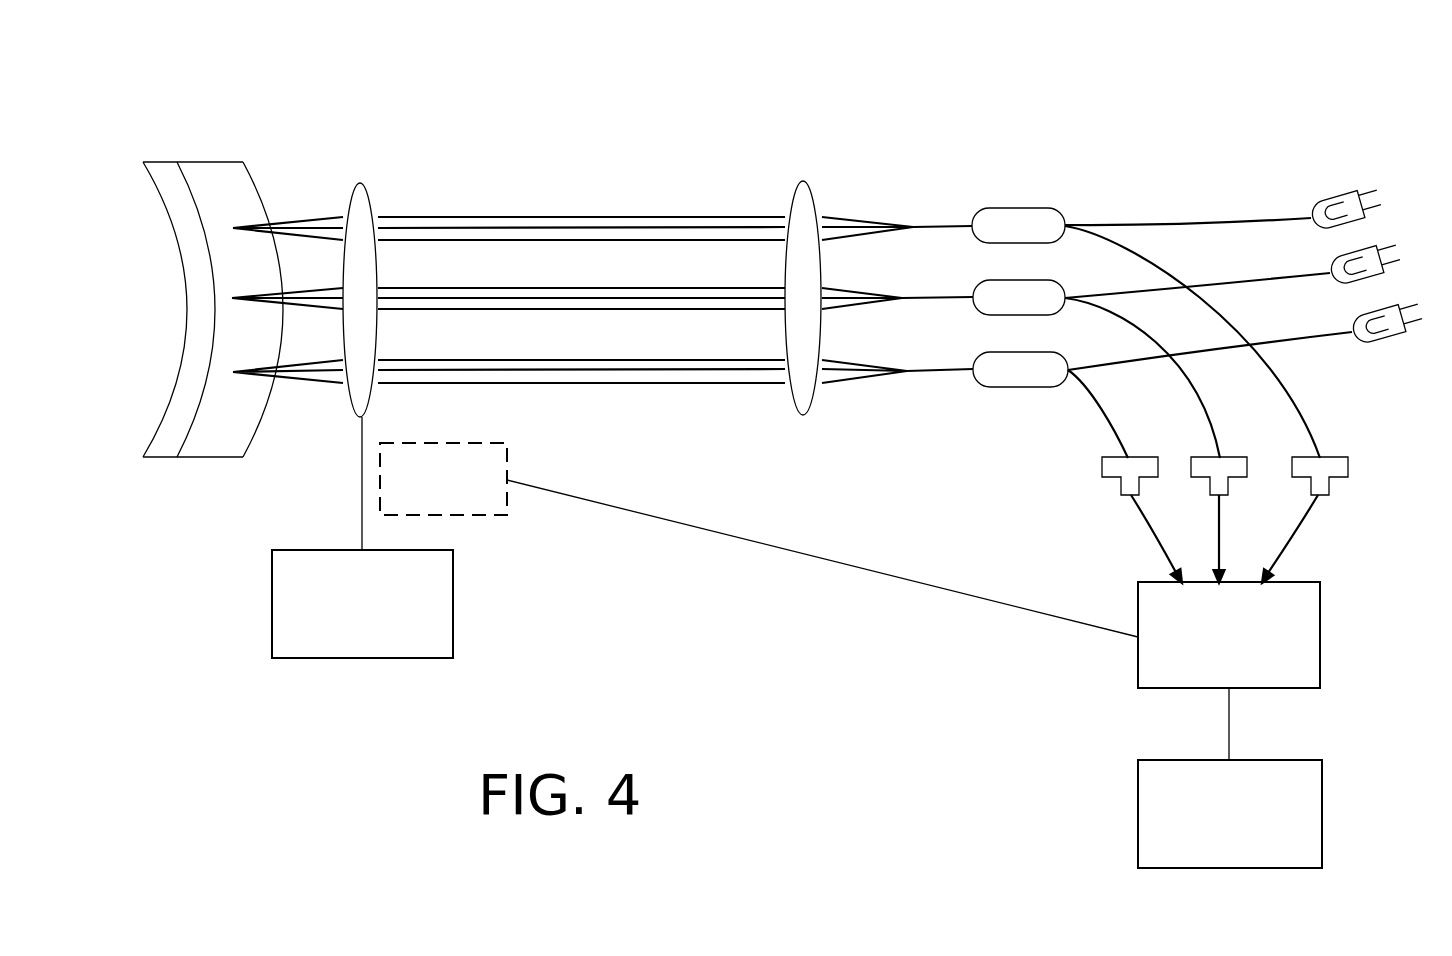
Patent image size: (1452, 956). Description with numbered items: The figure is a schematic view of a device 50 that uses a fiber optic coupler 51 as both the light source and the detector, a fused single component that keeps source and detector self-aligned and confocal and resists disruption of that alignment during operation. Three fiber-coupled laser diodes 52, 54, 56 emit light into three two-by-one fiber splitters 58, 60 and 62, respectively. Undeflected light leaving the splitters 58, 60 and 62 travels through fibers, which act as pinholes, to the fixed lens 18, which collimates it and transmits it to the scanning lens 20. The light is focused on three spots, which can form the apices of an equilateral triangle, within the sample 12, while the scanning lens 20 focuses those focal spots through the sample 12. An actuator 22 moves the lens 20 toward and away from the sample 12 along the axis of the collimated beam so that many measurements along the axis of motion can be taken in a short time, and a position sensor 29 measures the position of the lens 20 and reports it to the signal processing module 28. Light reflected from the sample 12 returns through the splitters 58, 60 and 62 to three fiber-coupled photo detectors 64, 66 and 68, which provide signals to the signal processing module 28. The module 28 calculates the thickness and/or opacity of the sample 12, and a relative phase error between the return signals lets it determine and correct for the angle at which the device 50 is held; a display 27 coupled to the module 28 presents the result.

The sample 12 is at (190, 160).
The scanning lens 20 is at (360, 182).
The fixed lens 18 is at (802, 183).
The device 50 is at (581, 102).
The fiber optic coupler 51 is at (1093, 135).
The 2×1 fiber splitter 58 is at (1018, 208).
The 2×1 fiber splitter 60 is at (1018, 280).
The 2×1 fiber splitter 62 is at (1022, 387).
The fiber-coupled laser diode 52 is at (1352, 190).
The fiber-coupled laser diode 54 is at (1372, 247).
The fiber-coupled laser diode 56 is at (1393, 305).
The fiber-coupled photo detector 64 is at (1348, 467).
The fiber-coupled photo detector 66 is at (1232, 457).
The fiber-coupled photo detector 68 is at (1102, 465).
The signal processing module 28 is at (913, 584).
The display 27 is at (1230, 778).
The position sensor 29 is at (443, 479).
The actuator 22 is at (362, 537).